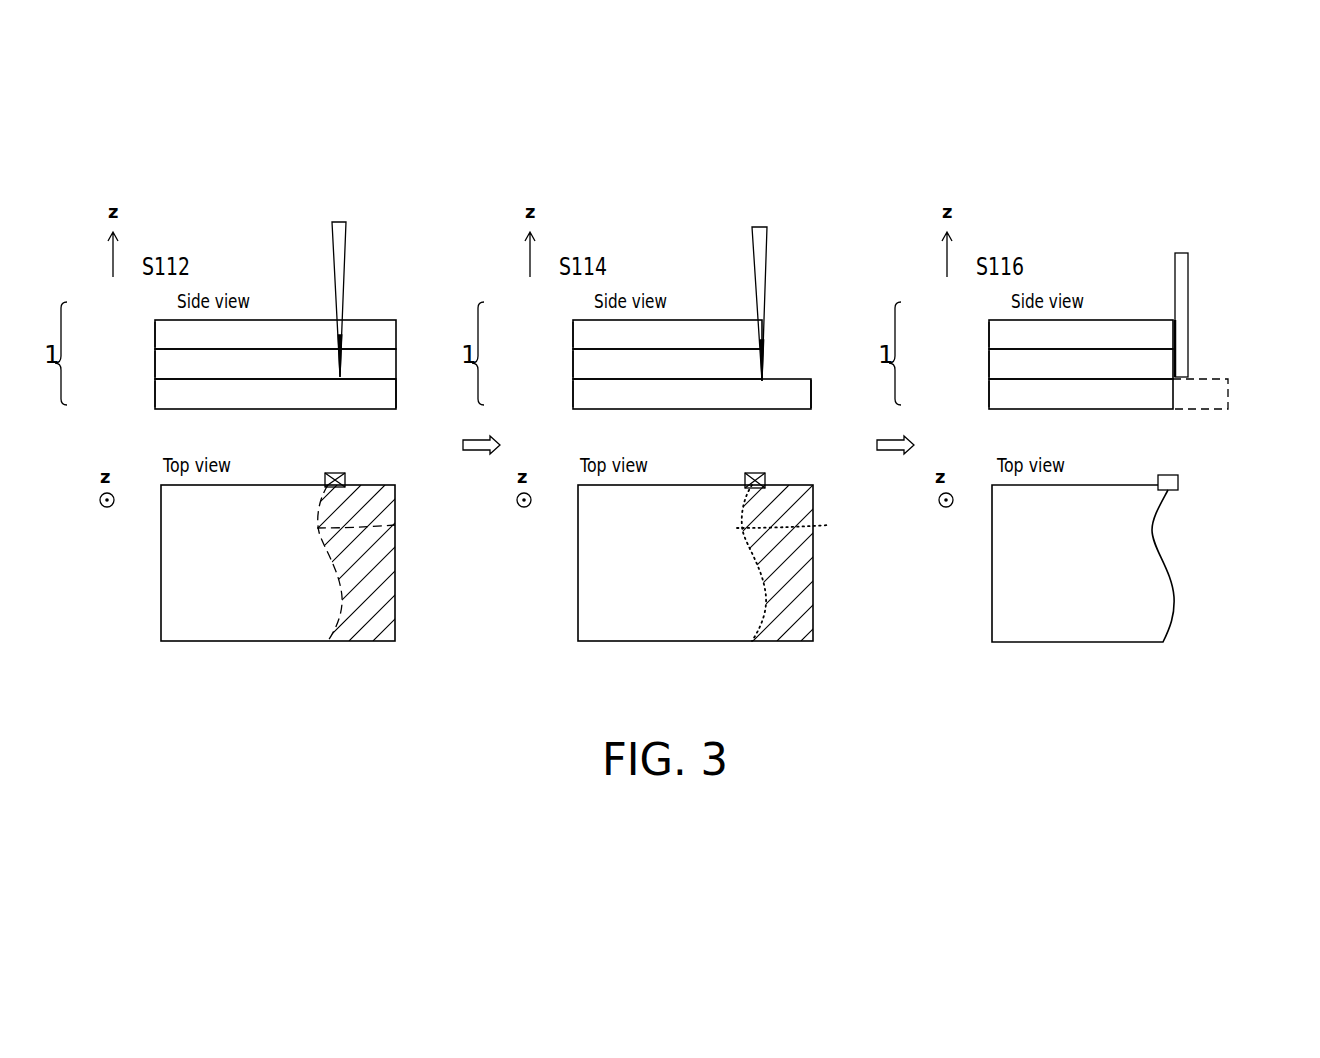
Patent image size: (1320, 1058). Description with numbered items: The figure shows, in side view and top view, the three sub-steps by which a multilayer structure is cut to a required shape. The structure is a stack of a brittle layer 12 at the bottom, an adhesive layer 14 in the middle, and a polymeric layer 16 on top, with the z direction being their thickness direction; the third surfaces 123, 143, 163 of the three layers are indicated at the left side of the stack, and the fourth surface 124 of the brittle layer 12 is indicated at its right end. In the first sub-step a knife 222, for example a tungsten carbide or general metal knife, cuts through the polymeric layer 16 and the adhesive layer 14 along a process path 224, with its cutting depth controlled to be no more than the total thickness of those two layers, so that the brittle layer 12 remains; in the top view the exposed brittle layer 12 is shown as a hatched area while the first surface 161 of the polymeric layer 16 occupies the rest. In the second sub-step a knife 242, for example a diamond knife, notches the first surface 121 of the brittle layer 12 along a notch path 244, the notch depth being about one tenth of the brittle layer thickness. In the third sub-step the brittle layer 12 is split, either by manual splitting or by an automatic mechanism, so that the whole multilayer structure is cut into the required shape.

The brittle layer 12 is at (162, 403).
The adhesive layer 14 is at (160, 375).
The polymeric layer 16 is at (172, 327).
The first surface 121 is at (382, 589).
The third surface 123 is at (149, 398).
The fourth surface 124 is at (405, 395).
The third surface 143 is at (149, 369).
The first surface 161 is at (216, 578).
The third surface 163 is at (149, 339).
The knife 222 is at (341, 260).
The process path 224 is at (396, 524).
The knife 242 is at (763, 263).
The path of the notch 244 is at (801, 523).